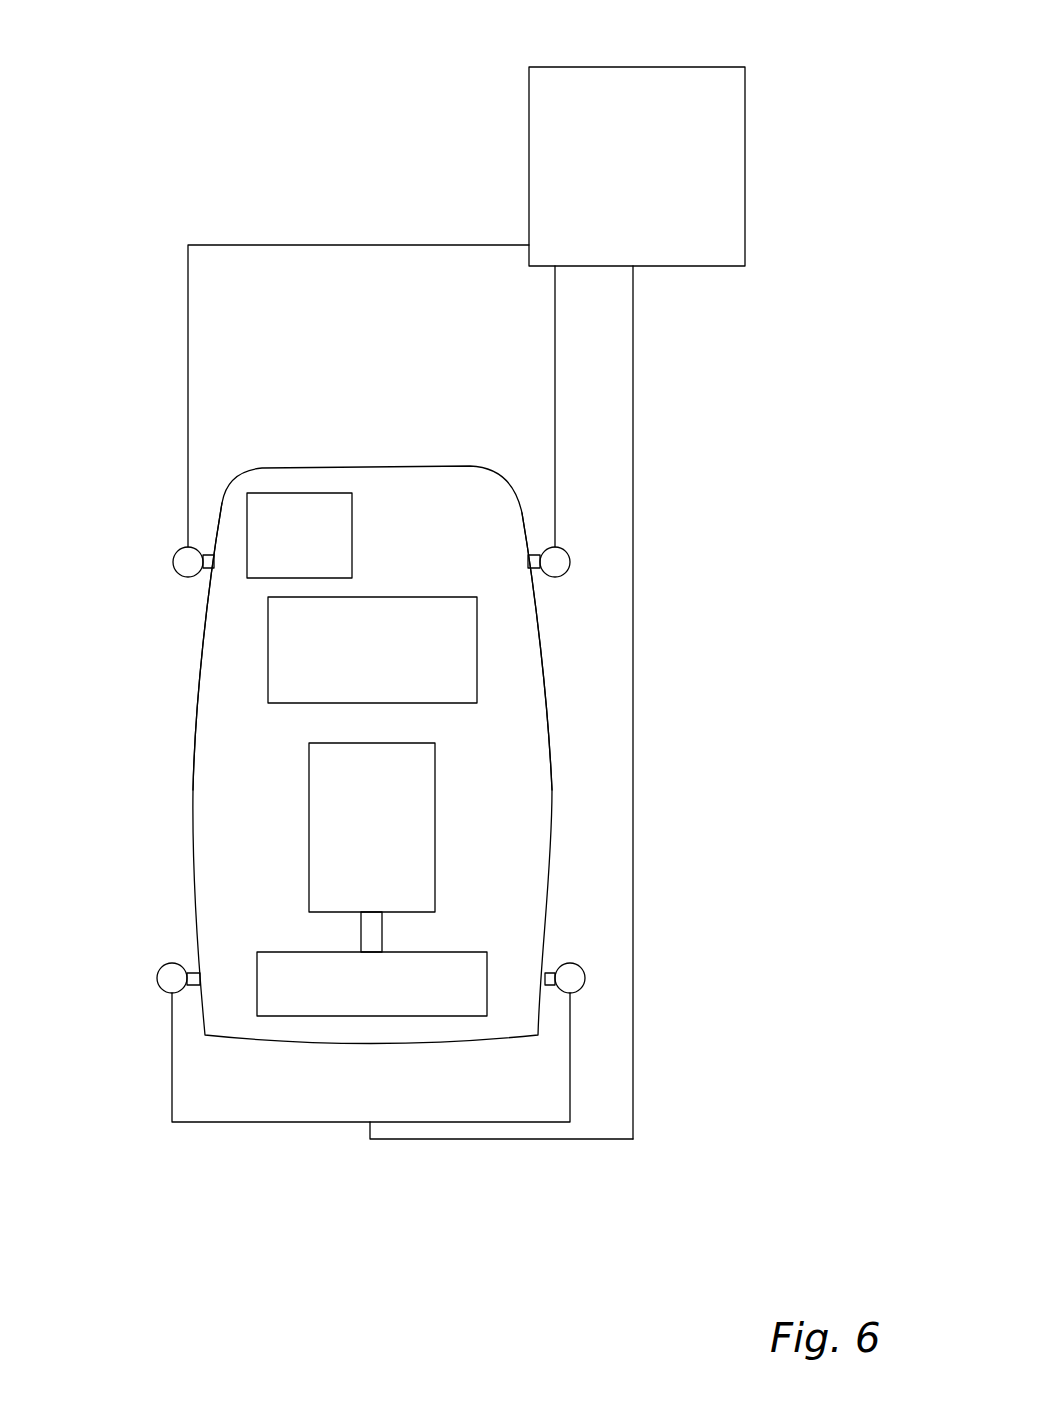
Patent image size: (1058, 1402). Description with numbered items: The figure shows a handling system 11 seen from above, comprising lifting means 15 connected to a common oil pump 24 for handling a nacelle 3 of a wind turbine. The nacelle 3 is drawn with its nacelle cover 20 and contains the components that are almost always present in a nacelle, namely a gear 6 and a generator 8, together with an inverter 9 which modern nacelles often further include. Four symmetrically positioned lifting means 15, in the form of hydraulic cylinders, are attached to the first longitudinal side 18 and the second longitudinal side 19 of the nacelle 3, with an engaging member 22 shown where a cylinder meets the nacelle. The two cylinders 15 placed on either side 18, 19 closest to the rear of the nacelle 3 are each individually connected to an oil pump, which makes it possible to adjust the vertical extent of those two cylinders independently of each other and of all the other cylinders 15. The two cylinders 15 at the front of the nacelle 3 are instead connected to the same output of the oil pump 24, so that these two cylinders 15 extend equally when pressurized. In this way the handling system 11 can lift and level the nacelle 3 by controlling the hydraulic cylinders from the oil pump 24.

The nacelle 3 is at (218, 778).
The gear 6 is at (312, 990).
The generator 8 is at (330, 840).
The inverter 9 is at (448, 662).
The handling system 11 is at (197, 172).
The lifting means 15 is at (553, 563).
The first longitudinal side 18 is at (590, 845).
The second longitudinal side 19 is at (197, 697).
The nacelle cover 20 is at (552, 768).
The engaging member 22 is at (557, 960).
The oil pump 24 is at (708, 193).